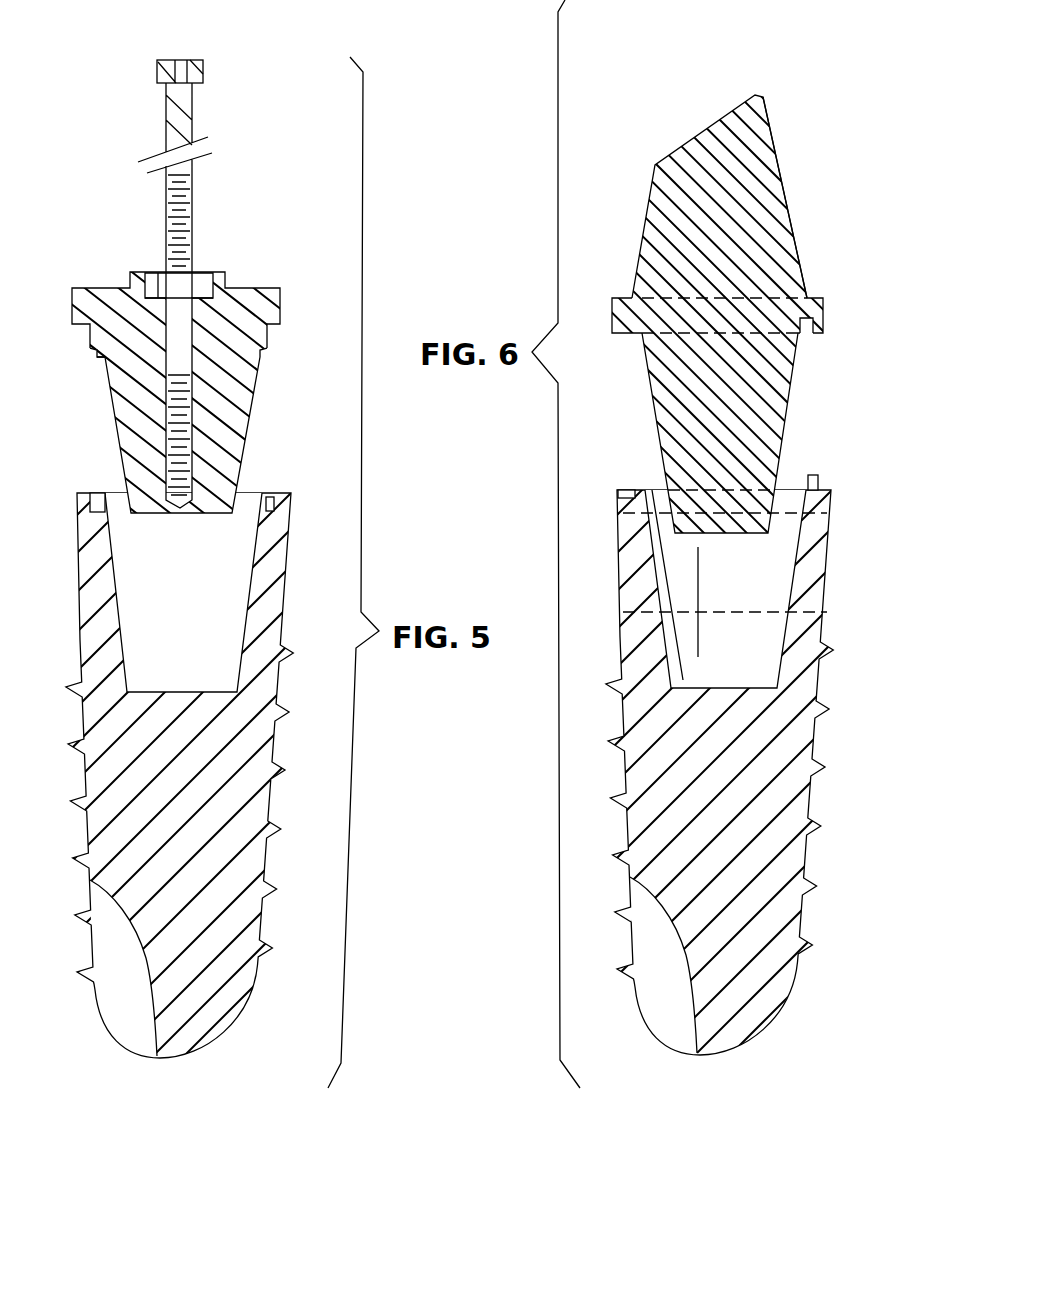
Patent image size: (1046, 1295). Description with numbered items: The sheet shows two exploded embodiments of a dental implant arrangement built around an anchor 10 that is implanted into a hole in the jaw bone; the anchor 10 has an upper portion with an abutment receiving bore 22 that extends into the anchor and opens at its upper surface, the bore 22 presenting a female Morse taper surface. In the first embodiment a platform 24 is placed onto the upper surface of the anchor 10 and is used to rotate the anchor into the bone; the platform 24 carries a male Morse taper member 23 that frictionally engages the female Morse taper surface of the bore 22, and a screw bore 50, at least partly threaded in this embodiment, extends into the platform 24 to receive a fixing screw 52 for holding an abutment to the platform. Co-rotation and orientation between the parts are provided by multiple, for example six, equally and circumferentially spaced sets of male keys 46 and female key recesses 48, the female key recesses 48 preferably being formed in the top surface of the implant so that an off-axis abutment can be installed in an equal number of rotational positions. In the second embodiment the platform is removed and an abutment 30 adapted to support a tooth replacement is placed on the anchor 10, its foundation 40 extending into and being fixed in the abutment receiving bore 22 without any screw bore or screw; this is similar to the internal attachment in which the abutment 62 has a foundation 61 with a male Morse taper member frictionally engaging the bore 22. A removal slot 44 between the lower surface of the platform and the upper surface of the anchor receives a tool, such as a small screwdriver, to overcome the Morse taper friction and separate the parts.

In FIG. 5, the anchor 10 is at (395, 770).
In FIG. 6, the anchor 10 is at (540, 755).
In FIG. 5, the abutment receiving bore 22 is at (253, 577).
In FIG. 6, the abutment receiving bore 22 is at (660, 557).
In FIG. 5, the male Morse taper member 23 is at (232, 450).
In FIG. 5, the platform 24 is at (191, 389).
In FIG. 6, the abutment 30 is at (690, 112).
In FIG. 6, the foundation 40 is at (736, 366).
In FIG. 6, the removal slot 44 is at (625, 488).
In FIG. 5, the male key 46 is at (90, 357).
In FIG. 6, the male key 46 is at (813, 477).
In FIG. 5, the female key recess 48 is at (97, 493).
In FIG. 6, the female key recess 48 is at (813, 333).
In FIG. 5, the screw bore 50 is at (113, 293).
In FIG. 5, the fixing screw 52 is at (193, 199).
In FIG. 6, the foundation 61 is at (777, 374).
In FIG. 6, the abutment 62 is at (805, 212).